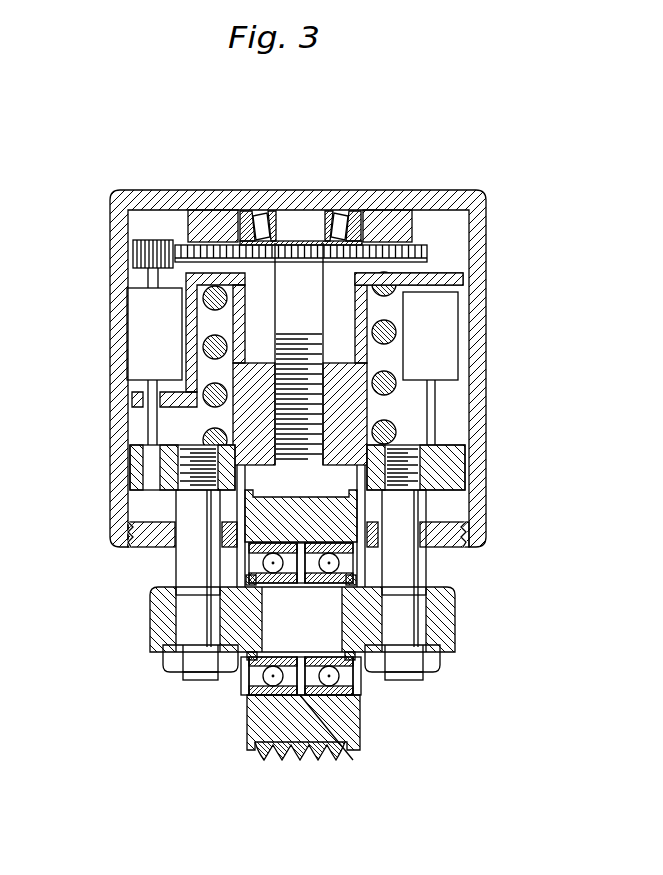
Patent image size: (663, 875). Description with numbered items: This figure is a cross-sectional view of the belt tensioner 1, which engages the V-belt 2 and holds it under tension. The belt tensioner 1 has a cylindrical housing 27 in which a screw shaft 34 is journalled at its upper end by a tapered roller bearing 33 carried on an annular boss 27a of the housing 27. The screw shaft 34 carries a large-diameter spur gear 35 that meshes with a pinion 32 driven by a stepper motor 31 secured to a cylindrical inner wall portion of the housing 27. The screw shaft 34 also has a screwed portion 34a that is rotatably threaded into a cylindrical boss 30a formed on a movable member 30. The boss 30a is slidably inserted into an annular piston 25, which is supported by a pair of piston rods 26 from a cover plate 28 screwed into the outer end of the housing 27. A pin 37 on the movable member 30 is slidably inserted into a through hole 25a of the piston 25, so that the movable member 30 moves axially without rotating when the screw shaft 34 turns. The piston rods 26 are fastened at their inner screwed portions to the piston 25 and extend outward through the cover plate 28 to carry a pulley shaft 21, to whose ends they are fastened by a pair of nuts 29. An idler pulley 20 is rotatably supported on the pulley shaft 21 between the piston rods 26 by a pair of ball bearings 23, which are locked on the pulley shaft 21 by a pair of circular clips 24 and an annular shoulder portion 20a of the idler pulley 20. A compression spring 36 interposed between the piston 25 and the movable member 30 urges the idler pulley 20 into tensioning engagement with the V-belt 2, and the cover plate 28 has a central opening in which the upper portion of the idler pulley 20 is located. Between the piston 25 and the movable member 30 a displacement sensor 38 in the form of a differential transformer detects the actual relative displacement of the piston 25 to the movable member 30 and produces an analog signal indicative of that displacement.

The belt tensioner 1 is at (445, 176).
The V-belt 2 is at (317, 763).
The idler pulley 20 is at (255, 736).
The annular shoulder portion 20a is at (340, 746).
The pulley shaft 21 is at (158, 625).
The ball bearings 23 is at (254, 705).
The circular clips 24 is at (253, 663).
The annular piston 25 is at (457, 460).
The through hole 25a is at (147, 478).
The piston rods 26 is at (184, 566).
The cylindrical housing 27 is at (288, 200).
The annular boss 27a is at (207, 222).
The cover plate 28 is at (128, 545).
The nuts 29 is at (172, 663).
The movable member 30 is at (355, 334).
The cylindrical boss 30a is at (245, 421).
The stepper motor 31 is at (163, 338).
The pinion 32 is at (142, 253).
The tapered roller bearing 33 is at (362, 212).
The screw shaft 34 is at (286, 325).
The screwed portion 34a is at (292, 462).
The spur gear 35 is at (427, 258).
The compression spring 36 is at (387, 394).
The pin 37 is at (148, 429).
The displacement sensor 38 is at (438, 342).